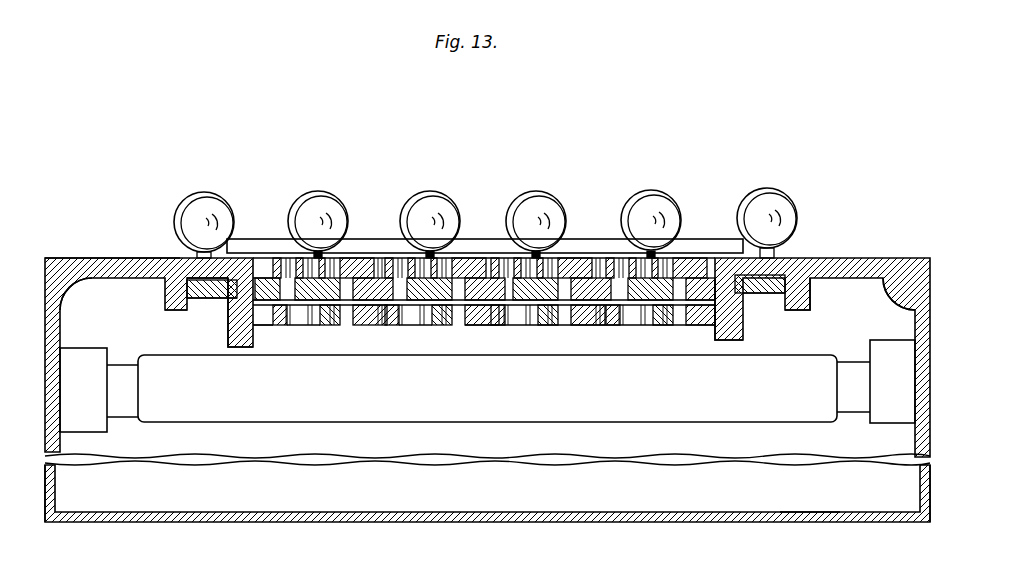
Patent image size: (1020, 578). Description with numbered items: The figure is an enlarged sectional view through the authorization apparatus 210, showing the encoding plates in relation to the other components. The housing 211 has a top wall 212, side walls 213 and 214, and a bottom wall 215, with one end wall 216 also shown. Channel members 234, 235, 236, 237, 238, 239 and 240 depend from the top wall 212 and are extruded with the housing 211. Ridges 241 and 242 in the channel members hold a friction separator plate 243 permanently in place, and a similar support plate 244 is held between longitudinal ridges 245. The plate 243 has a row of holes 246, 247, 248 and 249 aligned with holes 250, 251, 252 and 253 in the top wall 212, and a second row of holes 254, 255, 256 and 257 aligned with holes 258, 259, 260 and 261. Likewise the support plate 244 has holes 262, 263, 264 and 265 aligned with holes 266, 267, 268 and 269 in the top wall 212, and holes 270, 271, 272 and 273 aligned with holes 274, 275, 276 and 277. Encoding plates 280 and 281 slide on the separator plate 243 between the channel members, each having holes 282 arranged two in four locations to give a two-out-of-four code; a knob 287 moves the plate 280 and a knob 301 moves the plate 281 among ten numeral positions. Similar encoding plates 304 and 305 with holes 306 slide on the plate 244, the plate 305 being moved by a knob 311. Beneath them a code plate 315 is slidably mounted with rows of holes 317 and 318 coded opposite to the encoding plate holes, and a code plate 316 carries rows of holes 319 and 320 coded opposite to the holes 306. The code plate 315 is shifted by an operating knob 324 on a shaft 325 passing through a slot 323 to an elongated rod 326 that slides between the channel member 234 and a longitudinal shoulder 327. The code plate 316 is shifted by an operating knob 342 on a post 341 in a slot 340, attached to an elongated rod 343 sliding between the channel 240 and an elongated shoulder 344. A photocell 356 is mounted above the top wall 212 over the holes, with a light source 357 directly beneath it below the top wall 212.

The authorization apparatus 210 is at (852, 235).
The housing 211 is at (62, 258).
The top wall 212 is at (135, 258).
The side wall 213 is at (58, 447).
The side wall 214 is at (915, 440).
The bottom wall 215 is at (406, 515).
The end wall 216 is at (638, 487).
The channel member 234 is at (200, 292).
The channel member 235 is at (238, 335).
The channel member 236 is at (373, 265).
The channel member 237 is at (485, 342).
The channel member 238 is at (614, 280).
The channel member 239 is at (730, 342).
The channel member 240 is at (812, 312).
The ridge 241 is at (232, 318).
The ridge 242 is at (472, 330).
The friction separator plate 243 is at (357, 325).
The support plate 244 is at (605, 330).
The longitudinal ridge 245 is at (505, 330).
The hole 246 is at (268, 325).
The hole 247 is at (283, 318).
The hole 248 is at (345, 325).
The hole 249 is at (340, 300).
The hole 250 is at (263, 290).
The hole 251 is at (283, 258).
The hole 252 is at (317, 258).
The hole 253 is at (335, 265).
The hole 254 is at (372, 315).
The hole 255 is at (398, 325).
The hole 256 is at (425, 320).
The hole 257 is at (450, 320).
The hole 258 is at (393, 260).
The hole 259 is at (425, 262).
The hole 260 is at (440, 265).
The hole 261 is at (450, 270).
The hole 262 is at (505, 325).
The hole 263 is at (530, 320).
The hole 264 is at (540, 325).
The hole 265 is at (572, 320).
The hole 266 is at (522, 275).
The hole 267 is at (540, 265).
The hole 268 is at (555, 270).
The hole 269 is at (572, 275).
The hole 270 is at (638, 320).
The hole 271 is at (622, 325).
The hole 272 is at (680, 320).
The hole 273 is at (710, 328).
The hole 274 is at (645, 262).
The hole 275 is at (660, 270).
The hole 276 is at (675, 272).
The hole 277 is at (690, 272).
The encoding plate 280 is at (248, 270).
The encoding plate 281 is at (385, 265).
The hole 282 is at (290, 275).
The knob 287 is at (312, 260).
The knob 301 is at (405, 270).
The encoding plate 304 is at (503, 275).
The encoding plate 305 is at (757, 294).
The hole 306 is at (460, 275).
The knob 311 is at (632, 260).
The code plate 315 is at (355, 355).
The code plate 316 is at (550, 325).
The hole 317 is at (230, 335).
The hole 318 is at (440, 330).
The hole 319 is at (545, 330).
The hole 320 is at (697, 330).
The slot 323 is at (98, 294).
The operating knob 324 is at (200, 205).
The shaft 325 is at (205, 243).
The elongated rod 326 is at (210, 300).
The longitudinal shoulder 327 is at (220, 305).
The slot 340 is at (817, 287).
The post 341 is at (772, 256).
The operating knob 342 is at (768, 200).
The elongated rod 343 is at (778, 270).
The elongated shoulder 344 is at (755, 330).
The photocell 356 is at (740, 245).
The light source 357 is at (805, 412).